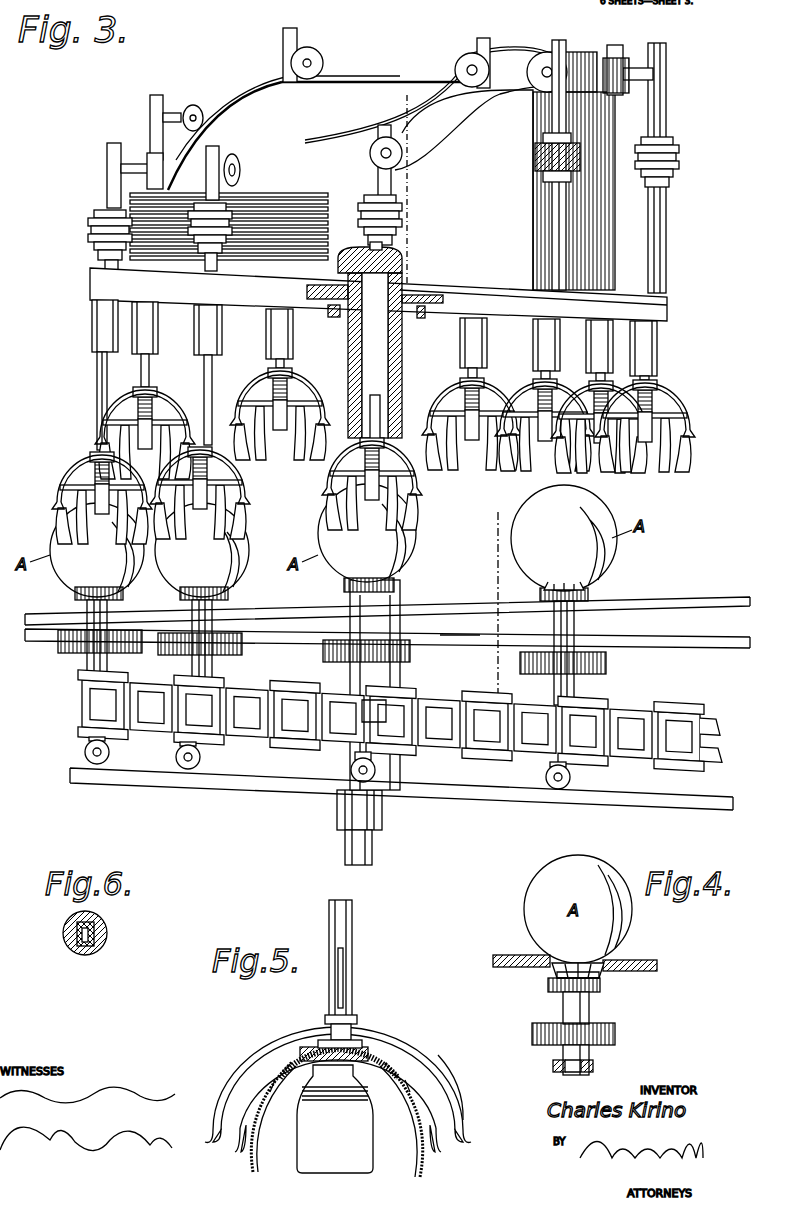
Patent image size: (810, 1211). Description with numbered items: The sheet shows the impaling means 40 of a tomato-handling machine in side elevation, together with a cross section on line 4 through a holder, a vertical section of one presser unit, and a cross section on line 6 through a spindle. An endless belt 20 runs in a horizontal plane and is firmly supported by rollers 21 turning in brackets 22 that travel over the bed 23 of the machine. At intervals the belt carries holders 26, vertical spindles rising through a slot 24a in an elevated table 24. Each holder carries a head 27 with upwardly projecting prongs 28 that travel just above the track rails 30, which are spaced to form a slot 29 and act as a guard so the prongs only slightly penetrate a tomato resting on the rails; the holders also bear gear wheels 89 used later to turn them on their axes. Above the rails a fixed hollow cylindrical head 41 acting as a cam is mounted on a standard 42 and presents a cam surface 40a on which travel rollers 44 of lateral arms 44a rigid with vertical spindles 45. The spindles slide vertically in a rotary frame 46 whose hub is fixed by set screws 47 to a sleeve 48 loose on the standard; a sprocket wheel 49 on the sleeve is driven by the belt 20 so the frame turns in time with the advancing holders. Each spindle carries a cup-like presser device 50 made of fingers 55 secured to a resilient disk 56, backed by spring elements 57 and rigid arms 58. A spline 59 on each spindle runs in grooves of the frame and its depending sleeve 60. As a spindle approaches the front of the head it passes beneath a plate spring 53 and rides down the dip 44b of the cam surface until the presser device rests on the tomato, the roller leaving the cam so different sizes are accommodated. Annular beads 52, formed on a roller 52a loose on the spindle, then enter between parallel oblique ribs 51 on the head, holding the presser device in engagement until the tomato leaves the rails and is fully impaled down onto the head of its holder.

In FIG. 3, the section line 4— 4 is at (491, 598).
In FIG. 3, the section line 6— 6 is at (92, 332).
In FIG. 3, the endless belt 20 is at (461, 750).
In FIG. 4, the endless belt 20 is at (553, 1066).
In FIG. 3, the rollers 21 is at (176, 758).
In FIG. 3, the brackets 22 is at (205, 750).
In FIG. 3, the bed 23 is at (506, 800).
In FIG. 3, the table 24 is at (712, 650).
In FIG. 3, the slot 24a is at (470, 622).
In FIG. 3, the holders 26 is at (212, 664).
In FIG. 4, the holders 26 is at (563, 1010).
In FIG. 3, the head 27 is at (228, 598).
In FIG. 4, the head 27 is at (602, 992).
In FIG. 3, the prongs 28 is at (542, 600).
In FIG. 4, the prongs 28 is at (550, 973).
In FIG. 4, the slot 29 is at (606, 978).
In FIG. 3, the track rails 30 is at (678, 597).
In FIG. 4, the track rails 30 is at (505, 955).
In FIG. 3, the impaling means 40 is at (377, 70).
In FIG. 3, the cam surface 40a is at (240, 96).
In FIG. 3, the head 41 is at (508, 190).
In FIG. 3, the standard 42 is at (403, 254).
In FIG. 3, the rollers 44 is at (313, 62).
In FIG. 3, the lateral arms 44a is at (170, 110).
In FIG. 3, the dip 44b is at (441, 148).
In FIG. 3, the spindles 45 is at (150, 126).
In FIG. 5, the spindles 45 is at (355, 986).
In FIG. 6, the spindles 45 is at (97, 920).
In FIG. 3, the rotary frame 46 is at (668, 315).
In FIG. 3, the set screws 47 is at (420, 320).
In FIG. 3, the sleeve 48 is at (348, 351).
In FIG. 3, the sprocket wheel 49 is at (275, 698).
In FIG. 3, the presser device 50 is at (371, 456).
In FIG. 5, the presser device 50 is at (338, 1089).
In FIG. 3, the ribs 51 is at (262, 193).
In FIG. 3, the beads 52 is at (532, 156).
In FIG. 3, the roller 52a is at (540, 140).
In FIG. 3, the plate spring 53 is at (506, 50).
In FIG. 5, the fingers 55 is at (298, 1152).
In FIG. 5, the resilient disk 56 is at (373, 1050).
In FIG. 3, the spring elements 57 is at (566, 56).
In FIG. 5, the spring elements 57 is at (432, 1090).
In FIG. 5, the arms 58 is at (450, 1110).
In FIG. 5, the spline 59 is at (338, 996).
In FIG. 6, the spline 59 is at (82, 955).
In FIG. 3, the depending sleeve 60 is at (660, 364).
In FIG. 6, the depending sleeve 60 is at (108, 930).
In FIG. 3, the gear wheels 89 is at (413, 656).